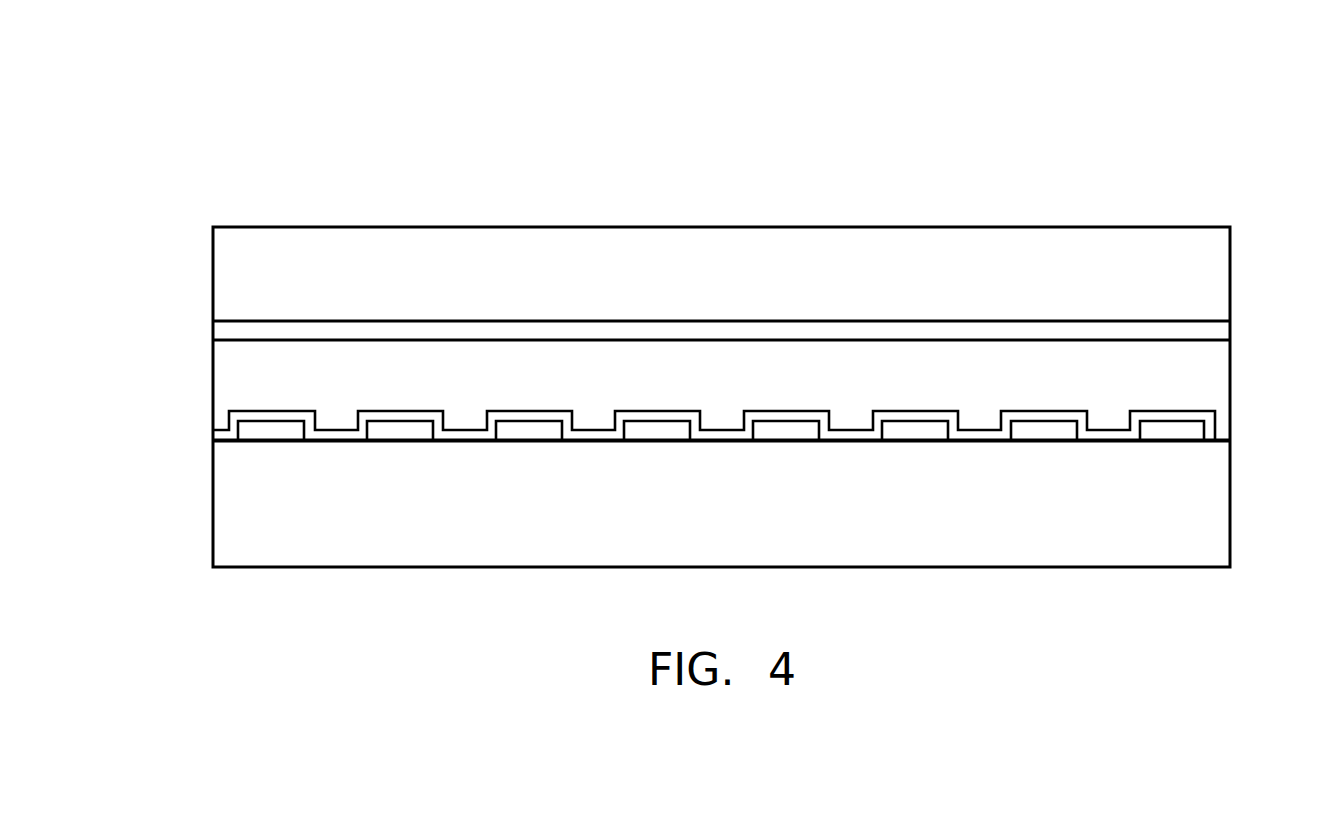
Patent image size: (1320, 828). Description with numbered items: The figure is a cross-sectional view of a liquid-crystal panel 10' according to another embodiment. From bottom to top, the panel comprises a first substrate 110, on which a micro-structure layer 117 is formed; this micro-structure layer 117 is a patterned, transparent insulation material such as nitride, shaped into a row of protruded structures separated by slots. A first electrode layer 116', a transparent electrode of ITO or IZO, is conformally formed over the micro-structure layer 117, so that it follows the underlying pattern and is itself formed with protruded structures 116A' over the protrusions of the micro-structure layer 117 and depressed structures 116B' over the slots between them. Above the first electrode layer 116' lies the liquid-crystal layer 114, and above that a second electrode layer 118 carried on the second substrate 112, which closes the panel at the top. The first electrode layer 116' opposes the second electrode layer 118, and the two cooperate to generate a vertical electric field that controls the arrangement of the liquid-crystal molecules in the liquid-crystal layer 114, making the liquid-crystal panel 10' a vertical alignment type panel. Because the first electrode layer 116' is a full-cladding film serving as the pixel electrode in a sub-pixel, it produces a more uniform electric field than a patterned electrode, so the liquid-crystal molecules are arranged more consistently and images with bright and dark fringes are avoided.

The liquid-crystal panel 10' is at (703, 315).
The first substrate 110 is at (1218, 500).
The second substrate 112 is at (1218, 272).
The liquid-crystal layer 114 is at (1218, 373).
The first electrode layer 116' is at (651, 387).
The protruded structures 116A' is at (645, 403).
The depressed structures 116B' is at (651, 385).
The micro-structure layer 117 is at (1206, 425).
The second electrode layer 118 is at (1218, 328).